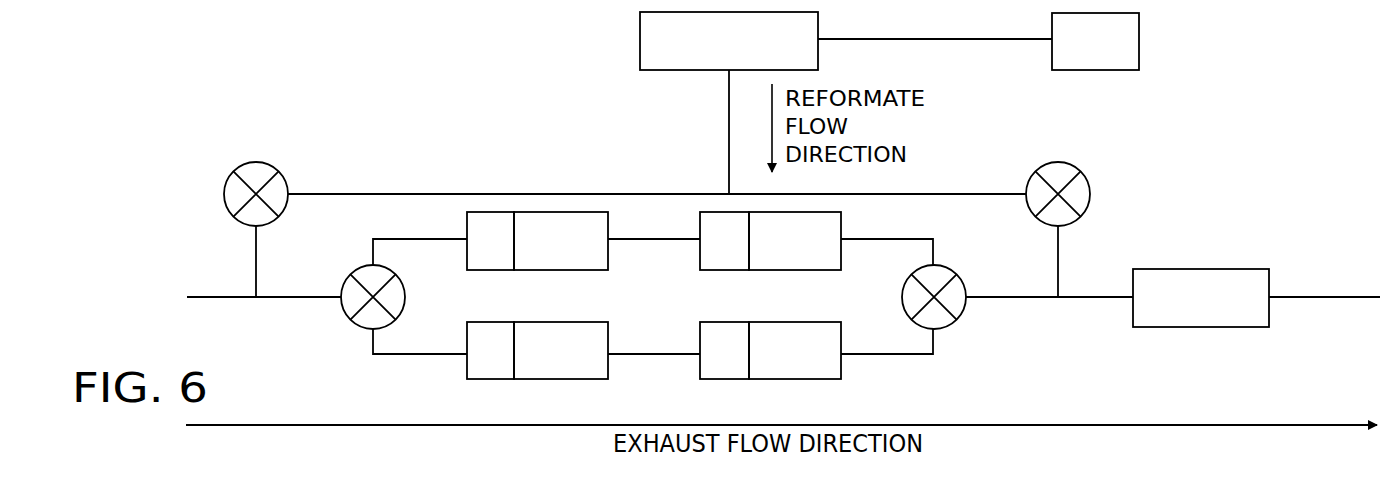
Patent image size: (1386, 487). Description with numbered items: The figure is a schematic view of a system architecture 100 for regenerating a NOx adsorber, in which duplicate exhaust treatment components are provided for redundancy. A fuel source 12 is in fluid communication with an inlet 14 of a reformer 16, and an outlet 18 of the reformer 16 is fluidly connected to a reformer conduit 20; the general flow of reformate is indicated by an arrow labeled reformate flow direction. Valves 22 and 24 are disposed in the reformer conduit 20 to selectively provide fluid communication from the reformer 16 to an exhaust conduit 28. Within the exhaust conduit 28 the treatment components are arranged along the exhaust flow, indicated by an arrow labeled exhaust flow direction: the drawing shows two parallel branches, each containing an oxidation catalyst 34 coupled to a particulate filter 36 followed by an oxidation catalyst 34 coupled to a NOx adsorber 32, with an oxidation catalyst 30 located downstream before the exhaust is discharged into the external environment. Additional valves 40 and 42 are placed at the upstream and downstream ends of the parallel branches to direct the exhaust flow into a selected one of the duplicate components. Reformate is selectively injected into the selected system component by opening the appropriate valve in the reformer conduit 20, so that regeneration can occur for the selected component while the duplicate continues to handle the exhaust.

The system architecture 100 is at (550, 88).
The fuel source 12 is at (1125, 70).
The inlet 14 is at (818, 36).
The reformer 16 is at (818, 53).
The outlet 18 is at (728, 72).
The reformer conduit 20 is at (925, 193).
The valve 22 is at (1070, 163).
The valve 24 is at (232, 170).
The exhaust conduit 28 is at (198, 297).
The oxidation catalyst 30 is at (1202, 328).
The NOx adsorber 32 is at (768, 271).
The oxidation catalyst 34 is at (495, 271).
The particulate filter 36 is at (535, 271).
The valve 40 is at (353, 320).
The valve 42 is at (948, 326).